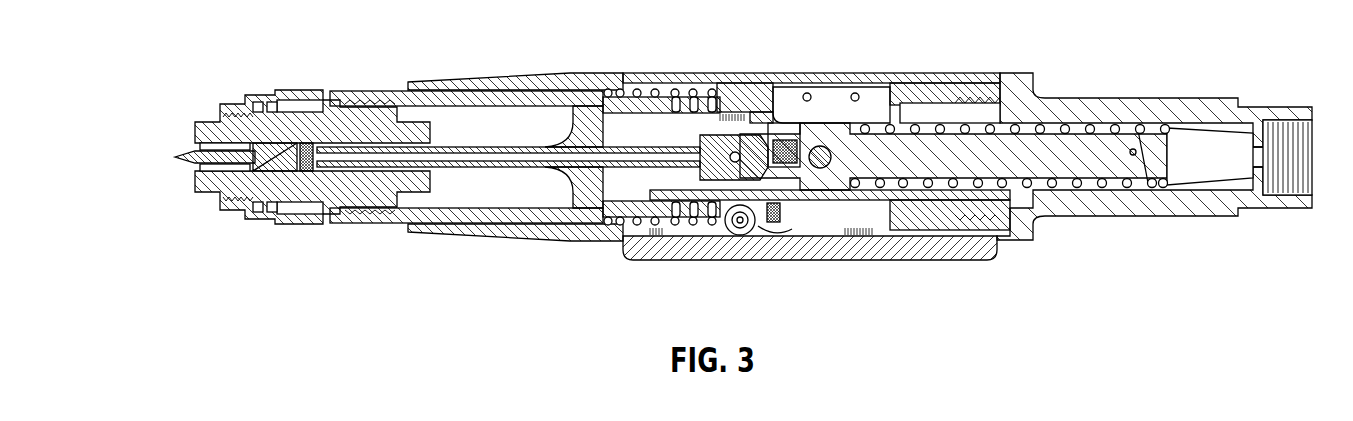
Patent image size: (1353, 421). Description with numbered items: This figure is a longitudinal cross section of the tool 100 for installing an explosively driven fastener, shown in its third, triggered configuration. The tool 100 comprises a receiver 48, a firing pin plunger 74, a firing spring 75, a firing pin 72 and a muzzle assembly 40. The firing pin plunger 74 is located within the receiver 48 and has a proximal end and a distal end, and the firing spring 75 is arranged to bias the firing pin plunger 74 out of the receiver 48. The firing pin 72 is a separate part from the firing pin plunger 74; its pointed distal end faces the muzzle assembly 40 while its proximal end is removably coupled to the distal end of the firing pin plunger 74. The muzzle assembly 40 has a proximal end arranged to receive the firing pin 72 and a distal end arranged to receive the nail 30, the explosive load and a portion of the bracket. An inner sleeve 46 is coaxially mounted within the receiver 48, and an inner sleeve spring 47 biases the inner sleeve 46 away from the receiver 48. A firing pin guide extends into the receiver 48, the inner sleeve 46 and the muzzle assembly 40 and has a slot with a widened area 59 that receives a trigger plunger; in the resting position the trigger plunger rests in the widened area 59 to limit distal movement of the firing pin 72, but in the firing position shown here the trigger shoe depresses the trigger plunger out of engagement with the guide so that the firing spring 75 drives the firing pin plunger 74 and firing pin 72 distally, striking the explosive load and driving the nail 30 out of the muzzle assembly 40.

The nail 30 is at (180, 153).
The muzzle assembly 40 is at (237, 95).
The inner sleeve 46 is at (465, 96).
The inner sleeve spring 47 is at (693, 91).
The receiver 48 is at (920, 92).
The widened area 59 is at (768, 123).
The firing pin 72 is at (500, 156).
The firing pin plunger 74 is at (921, 168).
The firing spring 75 is at (925, 160).
The tool 100 is at (1097, 52).